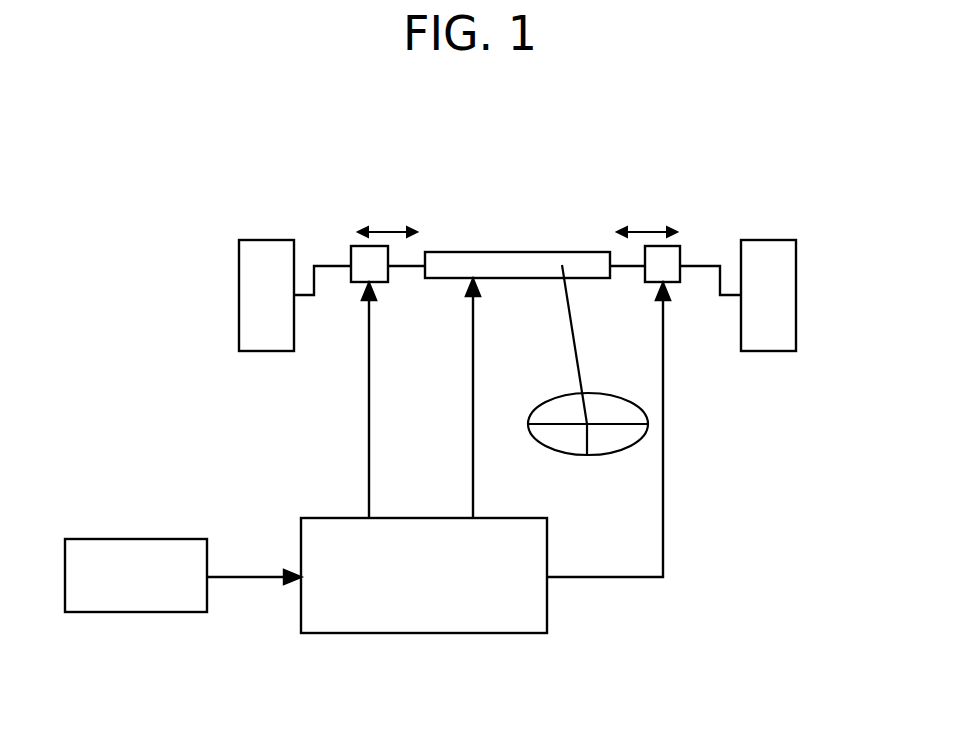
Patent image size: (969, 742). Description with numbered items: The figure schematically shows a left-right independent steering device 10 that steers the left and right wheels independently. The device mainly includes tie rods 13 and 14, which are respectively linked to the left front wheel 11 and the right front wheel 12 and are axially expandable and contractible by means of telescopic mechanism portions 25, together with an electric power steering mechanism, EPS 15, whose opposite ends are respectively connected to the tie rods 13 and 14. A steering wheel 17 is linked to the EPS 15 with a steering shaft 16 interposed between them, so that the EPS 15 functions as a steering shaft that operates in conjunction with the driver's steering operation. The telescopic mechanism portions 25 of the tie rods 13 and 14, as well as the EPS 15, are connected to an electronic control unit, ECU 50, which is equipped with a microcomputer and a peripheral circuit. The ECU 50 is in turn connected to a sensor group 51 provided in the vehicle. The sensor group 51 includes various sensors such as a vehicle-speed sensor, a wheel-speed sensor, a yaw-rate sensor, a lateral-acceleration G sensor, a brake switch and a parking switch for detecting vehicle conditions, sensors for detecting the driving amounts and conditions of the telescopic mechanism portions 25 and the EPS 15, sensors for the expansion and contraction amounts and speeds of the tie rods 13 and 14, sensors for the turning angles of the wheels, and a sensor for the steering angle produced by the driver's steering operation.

The left-right independent steering device 10 is at (518, 219).
The left front wheel 11 is at (239, 293).
The right front wheel 12 is at (797, 318).
The tie rod 13 is at (380, 200).
The tie rod 14 is at (678, 195).
The electric power steering mechanism (EPS) 15 is at (483, 252).
The steering shaft 16 is at (572, 337).
The steering wheel 17 is at (610, 455).
The telescopic mechanism portion 25 is at (388, 276).
The electronic control unit (ECU) 50 is at (344, 518).
The sensor group 51 is at (130, 540).